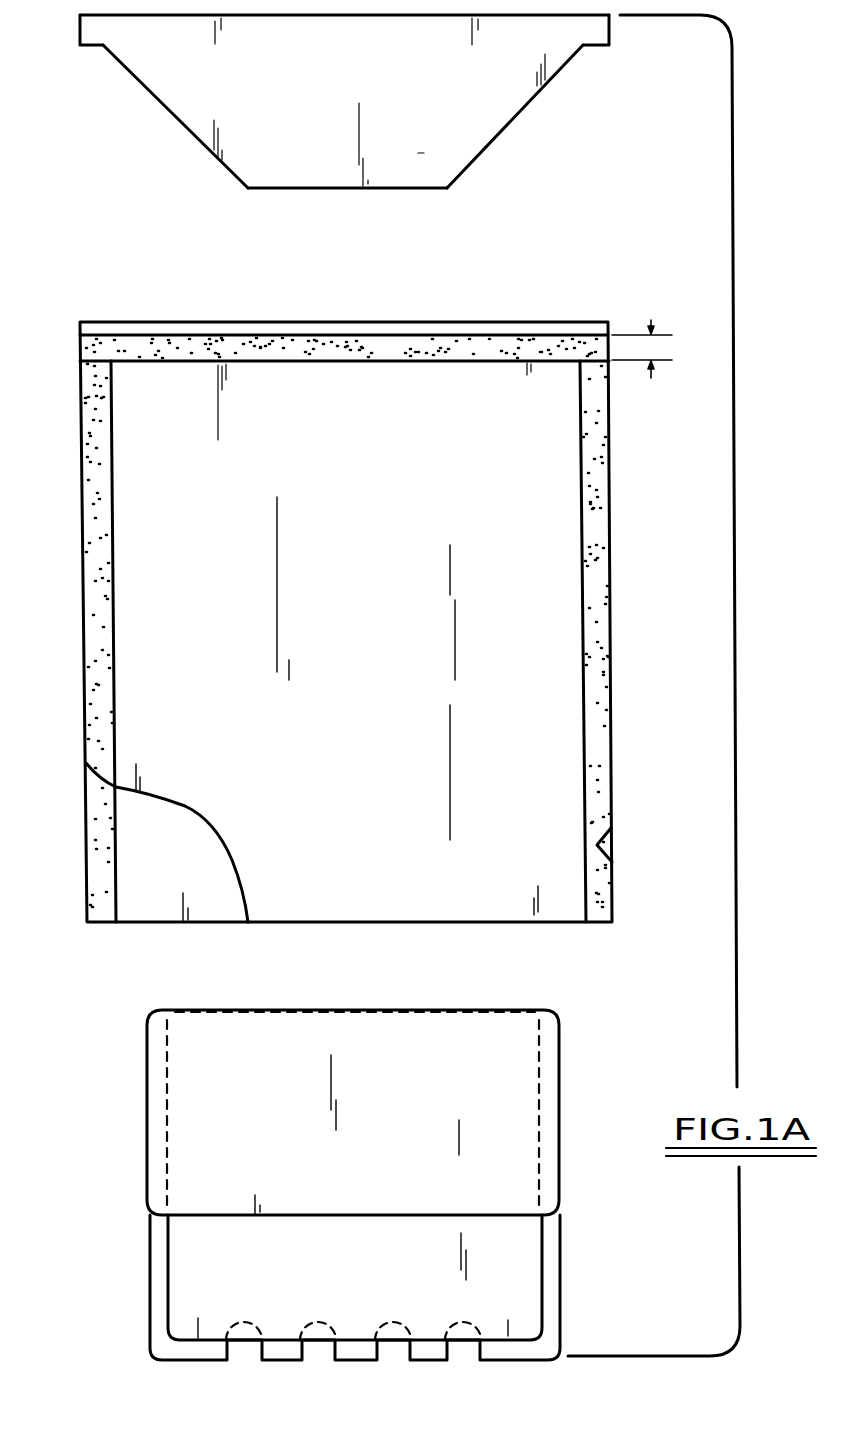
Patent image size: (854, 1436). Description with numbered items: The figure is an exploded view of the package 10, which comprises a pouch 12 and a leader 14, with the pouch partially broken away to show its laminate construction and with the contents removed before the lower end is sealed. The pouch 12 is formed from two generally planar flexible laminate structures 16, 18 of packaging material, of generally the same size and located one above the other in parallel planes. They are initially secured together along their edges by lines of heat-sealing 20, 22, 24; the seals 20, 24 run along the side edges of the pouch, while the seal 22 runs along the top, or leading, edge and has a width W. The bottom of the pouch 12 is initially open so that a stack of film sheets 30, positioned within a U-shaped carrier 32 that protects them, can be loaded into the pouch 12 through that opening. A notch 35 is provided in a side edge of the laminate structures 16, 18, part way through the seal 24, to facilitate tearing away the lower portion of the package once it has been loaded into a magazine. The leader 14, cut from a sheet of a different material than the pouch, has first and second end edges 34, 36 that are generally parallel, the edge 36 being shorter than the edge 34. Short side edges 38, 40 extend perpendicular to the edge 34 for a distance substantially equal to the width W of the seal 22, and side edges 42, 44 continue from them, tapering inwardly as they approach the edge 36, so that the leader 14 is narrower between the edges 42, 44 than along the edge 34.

The package 10 is at (343, 621).
The pouch 12 is at (340, 621).
The leader 14 is at (344, 120).
The laminate structure 16 is at (356, 658).
The laminate structure 18 is at (168, 905).
The line of heat-sealing 20 is at (84, 640).
The line of heat-sealing 22 is at (358, 356).
The line of heat-sealing 24 is at (600, 639).
The stack of film sheets 30 is at (366, 1272).
The U-shaped carrier 32 is at (368, 1178).
The first end edge 34 is at (288, 12).
The notch 35 is at (610, 846).
The second end edge 36 is at (352, 190).
The side edge 38 is at (80, 32).
The side edge 40 is at (610, 30).
The side edge 42 is at (168, 108).
The side edge 44 is at (524, 112).